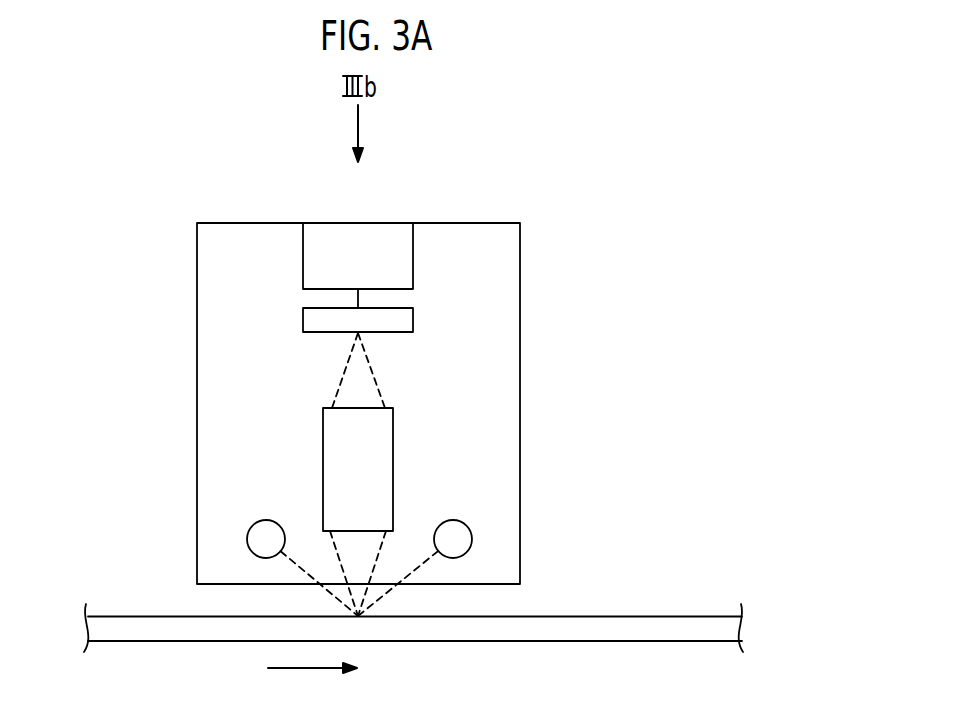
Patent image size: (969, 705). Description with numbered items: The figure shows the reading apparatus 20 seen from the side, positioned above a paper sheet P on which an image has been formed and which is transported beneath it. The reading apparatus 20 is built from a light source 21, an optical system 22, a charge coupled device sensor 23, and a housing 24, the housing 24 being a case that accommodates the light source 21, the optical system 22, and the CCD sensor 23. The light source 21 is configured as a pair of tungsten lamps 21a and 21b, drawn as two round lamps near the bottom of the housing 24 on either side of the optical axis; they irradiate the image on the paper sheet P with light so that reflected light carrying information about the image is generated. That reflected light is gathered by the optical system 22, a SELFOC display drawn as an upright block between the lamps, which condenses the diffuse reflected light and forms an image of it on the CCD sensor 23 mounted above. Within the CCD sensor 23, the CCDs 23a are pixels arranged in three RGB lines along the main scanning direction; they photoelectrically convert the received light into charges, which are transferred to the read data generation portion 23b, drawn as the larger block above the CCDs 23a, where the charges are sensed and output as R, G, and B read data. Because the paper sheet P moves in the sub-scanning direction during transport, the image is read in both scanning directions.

The reading apparatus 20 is at (540, 190).
The light source 21 is at (359, 474).
The tungsten lamp 21a is at (247, 539).
The tungsten lamp 21b is at (473, 538).
The optical system 22 is at (393, 455).
The CCD sensor 23 is at (471, 283).
The CCDs 23a is at (413, 320).
The read data generation portion 23b is at (413, 259).
The housing 24 is at (521, 388).
The paper sheet P is at (120, 617).